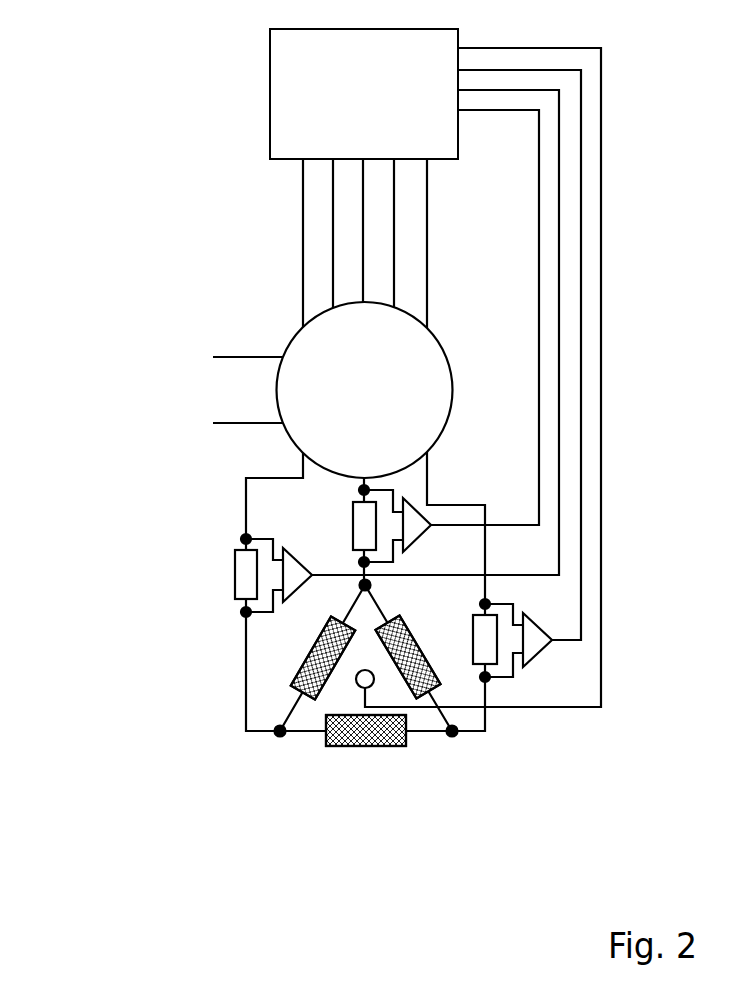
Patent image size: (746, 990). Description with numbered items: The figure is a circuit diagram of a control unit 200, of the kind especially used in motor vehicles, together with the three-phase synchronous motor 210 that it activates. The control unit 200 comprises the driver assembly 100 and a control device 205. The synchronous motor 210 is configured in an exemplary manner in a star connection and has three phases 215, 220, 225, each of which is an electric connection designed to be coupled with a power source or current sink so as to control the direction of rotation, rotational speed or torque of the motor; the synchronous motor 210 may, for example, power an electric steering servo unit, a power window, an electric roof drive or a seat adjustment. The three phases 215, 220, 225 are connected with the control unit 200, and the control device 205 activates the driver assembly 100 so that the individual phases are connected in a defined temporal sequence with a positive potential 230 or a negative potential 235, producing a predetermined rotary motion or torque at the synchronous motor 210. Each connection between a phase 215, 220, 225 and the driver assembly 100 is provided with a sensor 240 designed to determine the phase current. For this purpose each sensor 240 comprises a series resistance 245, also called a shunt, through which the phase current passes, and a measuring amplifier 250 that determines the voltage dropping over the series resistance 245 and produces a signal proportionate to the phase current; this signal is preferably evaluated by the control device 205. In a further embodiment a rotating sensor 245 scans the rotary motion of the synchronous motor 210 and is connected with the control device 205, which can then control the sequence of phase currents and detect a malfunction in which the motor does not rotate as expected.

The control unit 200 is at (260, 102).
The control device 205 is at (308, 121).
The driver assembly 100 is at (295, 335).
The positive potential 230 is at (227, 357).
The negative potential 235 is at (227, 423).
The sensor 240 is at (340, 522).
The series resistance 245 is at (247, 580).
The measuring amplifier 250 is at (295, 575).
The synchronous motor 210 is at (232, 692).
The phase 220 is at (352, 588).
The phase 215 is at (277, 745).
The phase 225 is at (453, 745).